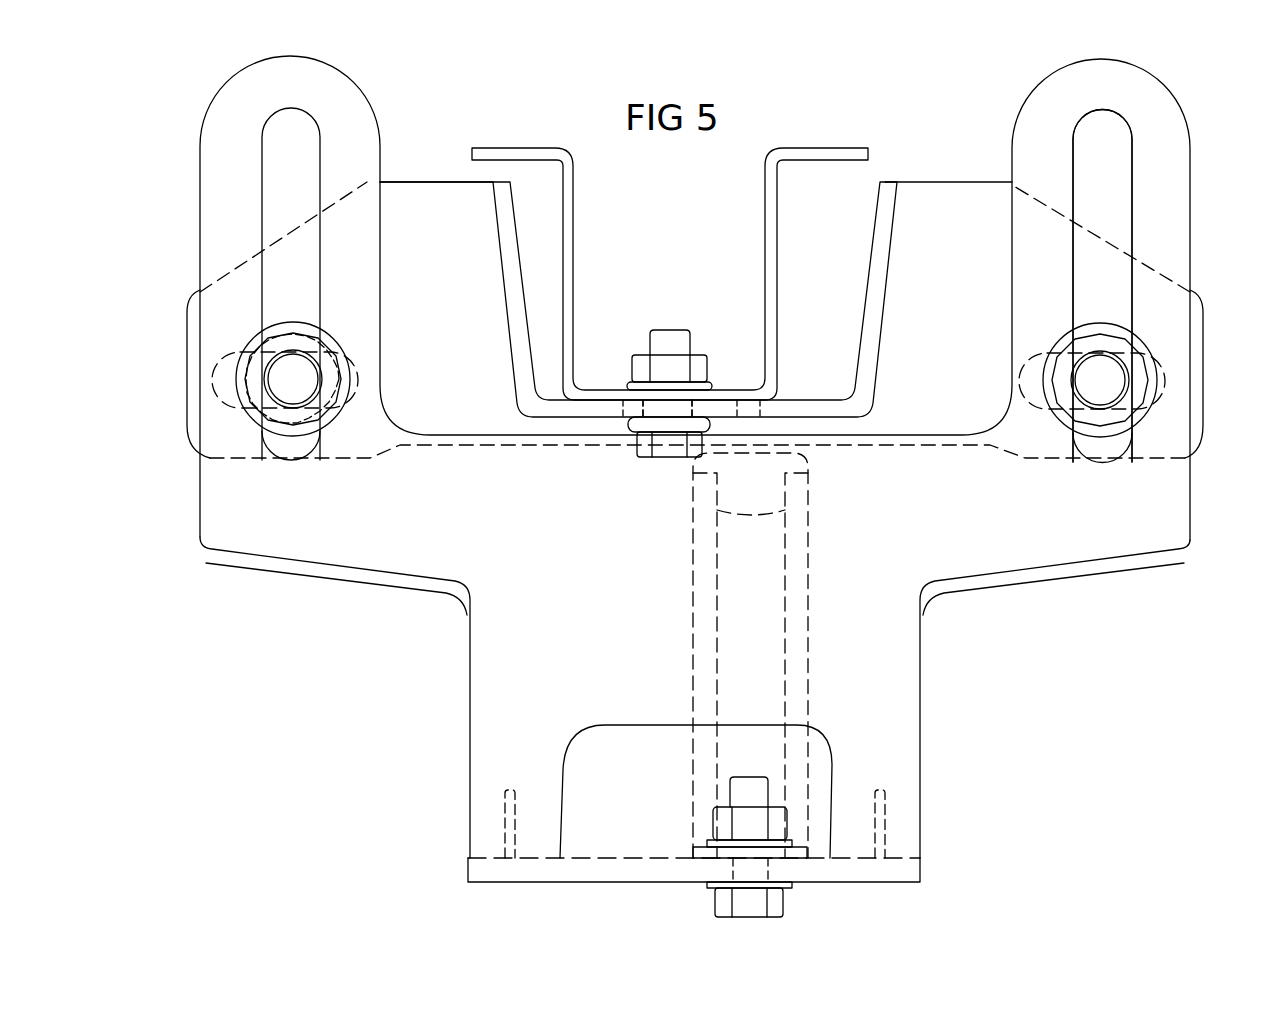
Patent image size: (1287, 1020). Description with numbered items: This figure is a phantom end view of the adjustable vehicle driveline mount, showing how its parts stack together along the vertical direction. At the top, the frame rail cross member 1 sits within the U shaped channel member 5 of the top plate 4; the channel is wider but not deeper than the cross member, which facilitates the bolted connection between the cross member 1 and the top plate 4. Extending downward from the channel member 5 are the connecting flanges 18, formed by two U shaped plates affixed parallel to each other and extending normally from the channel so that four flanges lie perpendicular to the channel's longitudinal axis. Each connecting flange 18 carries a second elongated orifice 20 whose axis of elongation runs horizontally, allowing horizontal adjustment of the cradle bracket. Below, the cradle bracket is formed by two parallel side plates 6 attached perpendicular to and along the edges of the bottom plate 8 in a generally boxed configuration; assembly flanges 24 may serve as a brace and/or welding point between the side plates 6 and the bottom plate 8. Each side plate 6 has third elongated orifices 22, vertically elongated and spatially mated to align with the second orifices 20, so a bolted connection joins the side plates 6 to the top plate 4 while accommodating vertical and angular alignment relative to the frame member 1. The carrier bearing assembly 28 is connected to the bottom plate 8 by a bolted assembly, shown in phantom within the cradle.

The frame rail cross member 1 is at (840, 152).
The top plate 4 is at (432, 158).
The U shaped channel member 5 is at (885, 185).
The side plates 6 is at (392, 548).
The bottom plate 8 is at (915, 873).
The connecting flanges 18 is at (192, 293).
The second elongated orifices 20 is at (215, 376).
The third elongated orifices 22 is at (1120, 152).
The assembly flanges 24 is at (887, 820).
The carrier bearing assembly 28 is at (800, 625).